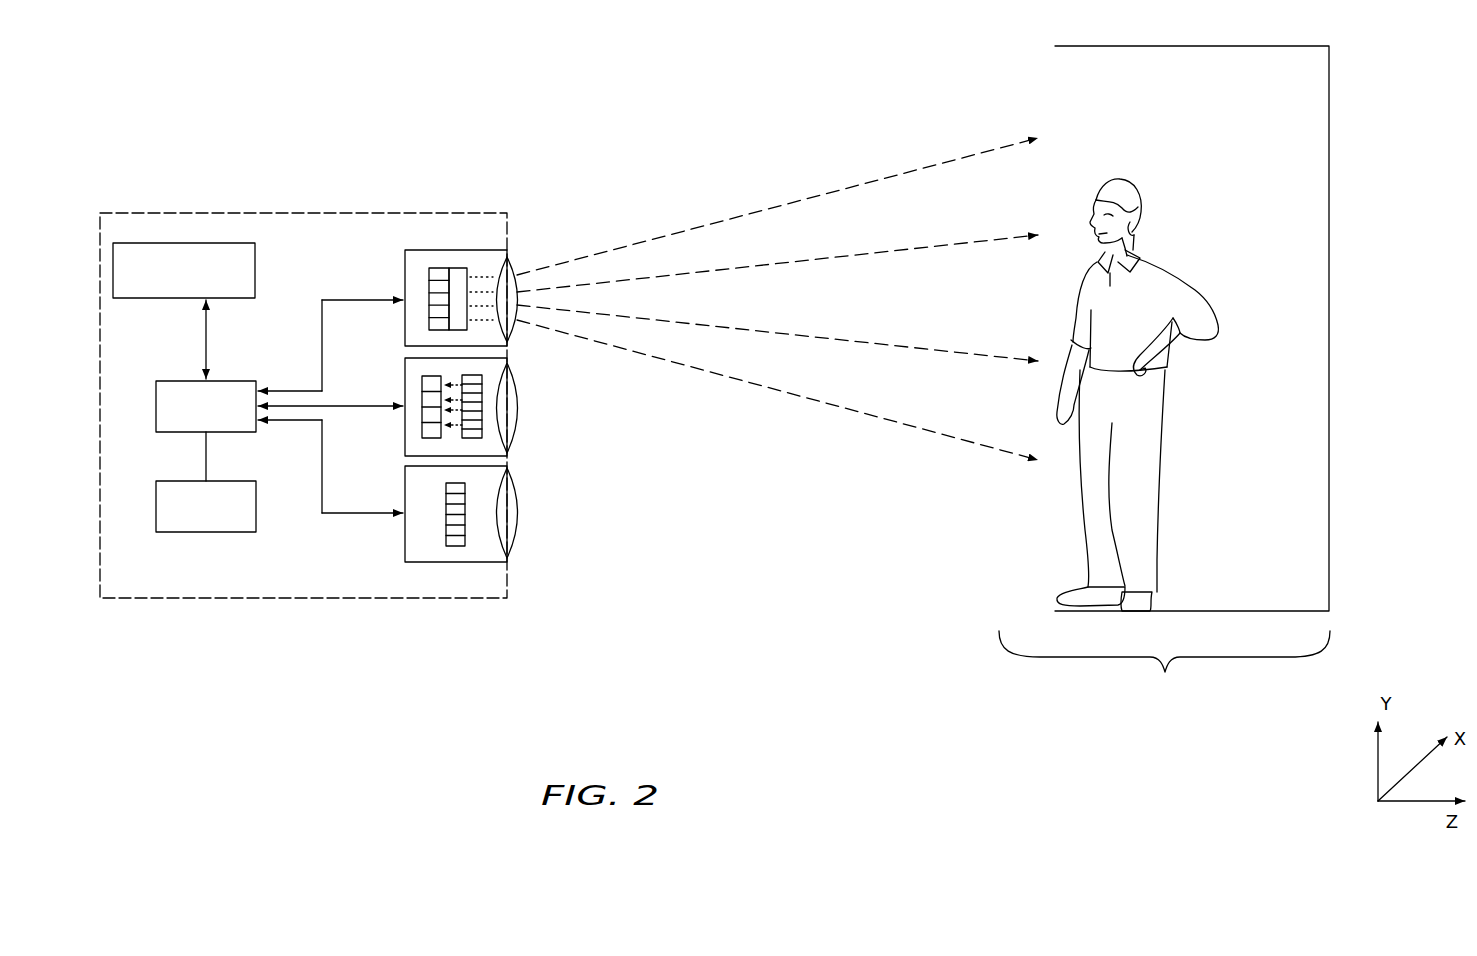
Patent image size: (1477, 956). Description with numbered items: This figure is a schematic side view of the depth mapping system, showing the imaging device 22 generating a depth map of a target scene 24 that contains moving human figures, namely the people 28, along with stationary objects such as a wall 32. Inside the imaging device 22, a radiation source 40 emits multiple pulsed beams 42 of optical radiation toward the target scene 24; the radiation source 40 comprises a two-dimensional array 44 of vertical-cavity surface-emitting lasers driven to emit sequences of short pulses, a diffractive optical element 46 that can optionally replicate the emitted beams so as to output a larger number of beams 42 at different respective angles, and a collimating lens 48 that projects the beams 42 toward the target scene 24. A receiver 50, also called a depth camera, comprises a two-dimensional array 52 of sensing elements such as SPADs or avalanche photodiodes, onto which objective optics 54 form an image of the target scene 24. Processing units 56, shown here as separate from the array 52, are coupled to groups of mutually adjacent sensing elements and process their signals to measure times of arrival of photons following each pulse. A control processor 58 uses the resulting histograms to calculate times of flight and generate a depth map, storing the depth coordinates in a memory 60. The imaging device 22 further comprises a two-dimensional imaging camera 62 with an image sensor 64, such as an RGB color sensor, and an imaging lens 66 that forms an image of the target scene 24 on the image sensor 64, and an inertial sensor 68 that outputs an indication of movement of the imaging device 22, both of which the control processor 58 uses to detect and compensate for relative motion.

The imaging device 22 is at (212, 213).
The target scene 24 is at (1164, 673).
The human figures 28 is at (1140, 182).
The wall 32 is at (1330, 240).
The radiation source 40 is at (463, 240).
The pulsed beams 42 is at (965, 157).
The two-dimensional array 44 is at (429, 283).
The diffractive optical element 46 is at (460, 268).
The collimating lens 48 is at (508, 257).
The receiver 50 is at (480, 419).
The two-dimensional array 52 is at (470, 438).
The objective optics 54 is at (517, 378).
The processing units 56 is at (425, 438).
The control processor 58 is at (247, 381).
The memory 60 is at (207, 532).
The two-dimensional imaging camera 62 is at (479, 558).
The image sensor 64 is at (440, 522).
The imaging lens 66 is at (517, 512).
The inertial sensor 68 is at (172, 298).